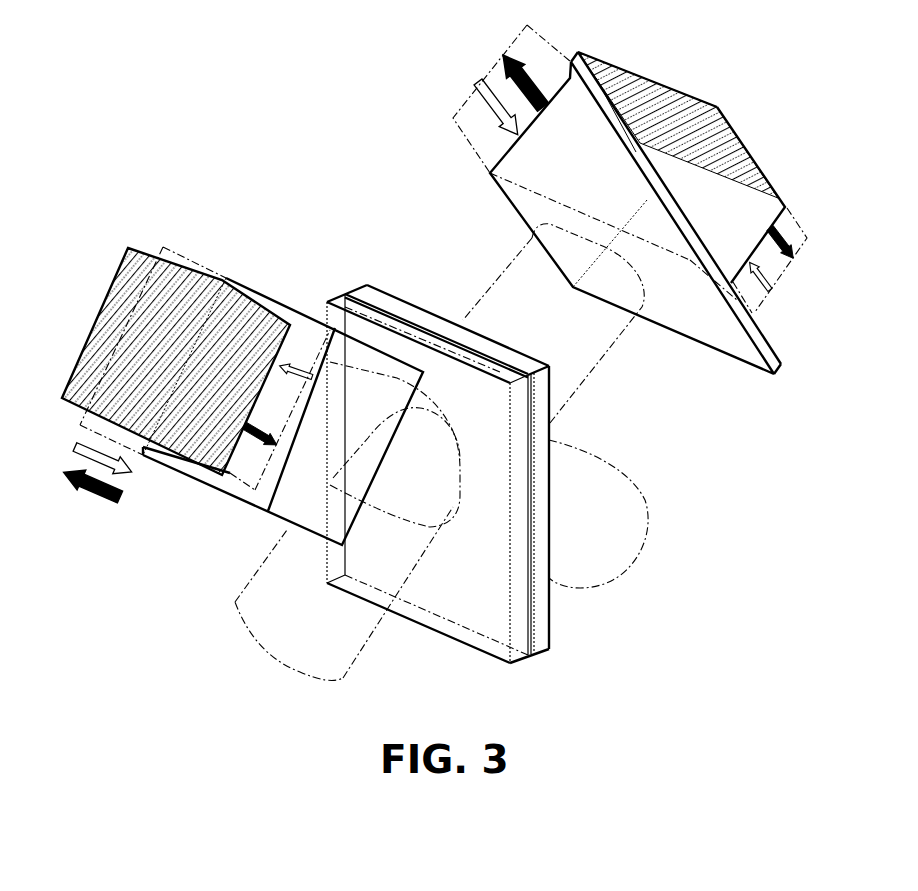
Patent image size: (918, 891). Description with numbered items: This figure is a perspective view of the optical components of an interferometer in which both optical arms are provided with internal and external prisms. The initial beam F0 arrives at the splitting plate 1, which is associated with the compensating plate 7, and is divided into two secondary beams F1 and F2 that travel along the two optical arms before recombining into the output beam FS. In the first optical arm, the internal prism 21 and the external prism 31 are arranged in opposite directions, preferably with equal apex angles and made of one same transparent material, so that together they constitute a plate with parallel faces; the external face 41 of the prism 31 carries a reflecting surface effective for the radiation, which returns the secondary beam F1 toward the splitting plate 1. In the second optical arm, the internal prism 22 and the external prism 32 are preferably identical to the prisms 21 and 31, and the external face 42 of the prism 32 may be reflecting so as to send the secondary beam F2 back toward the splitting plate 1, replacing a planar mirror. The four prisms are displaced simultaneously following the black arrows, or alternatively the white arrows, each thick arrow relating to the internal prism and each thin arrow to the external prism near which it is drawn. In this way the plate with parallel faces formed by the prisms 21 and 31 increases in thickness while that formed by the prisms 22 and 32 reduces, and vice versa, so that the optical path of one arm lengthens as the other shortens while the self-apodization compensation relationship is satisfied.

The splitting plate 1 is at (551, 612).
The compensating plate 7 is at (483, 656).
The internal prism of the first optical arm 21 is at (733, 357).
The internal prism of the second optical arm 22 is at (240, 503).
The external prism of the first optical arm 31 is at (648, 80).
The external prism of the second optical arm 32 is at (109, 290).
The external face of the prism 31 41 is at (683, 130).
The external face of the prism 32 42 is at (147, 365).
The initial beam F0 is at (650, 555).
The secondary beam F1 is at (605, 352).
The secondary beam F2 is at (397, 378).
The output beam FS is at (267, 668).